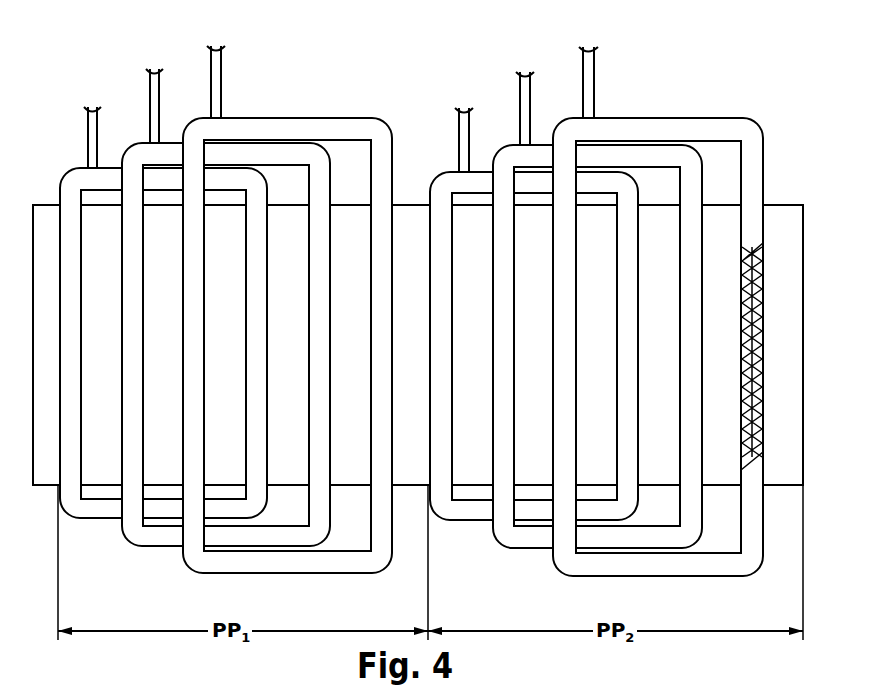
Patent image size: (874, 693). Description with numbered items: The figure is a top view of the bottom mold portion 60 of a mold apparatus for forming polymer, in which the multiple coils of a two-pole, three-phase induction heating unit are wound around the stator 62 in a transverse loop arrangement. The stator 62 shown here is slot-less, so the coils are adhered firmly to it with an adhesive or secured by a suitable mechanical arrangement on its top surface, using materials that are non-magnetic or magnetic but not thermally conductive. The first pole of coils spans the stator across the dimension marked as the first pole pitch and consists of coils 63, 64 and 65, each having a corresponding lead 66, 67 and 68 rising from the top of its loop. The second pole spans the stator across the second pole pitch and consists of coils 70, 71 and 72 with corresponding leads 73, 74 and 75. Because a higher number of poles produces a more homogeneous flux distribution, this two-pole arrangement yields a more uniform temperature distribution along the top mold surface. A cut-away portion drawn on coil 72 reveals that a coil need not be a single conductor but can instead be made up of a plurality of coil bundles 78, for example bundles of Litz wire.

The bottom mold portion 60 is at (688, 72).
The stator 62 is at (42, 228).
The coil 63 is at (98, 507).
The coil 64 is at (137, 529).
The coil 65 is at (197, 556).
The lead 66 is at (88, 132).
The lead 67 is at (150, 90).
The lead 68 is at (211, 65).
The coil 70 is at (461, 507).
The coil 71 is at (507, 533).
The coil 72 is at (565, 560).
The lead 73 is at (459, 135).
The lead 74 is at (520, 92).
The lead 75 is at (583, 68).
The coil bundles 78 is at (741, 353).